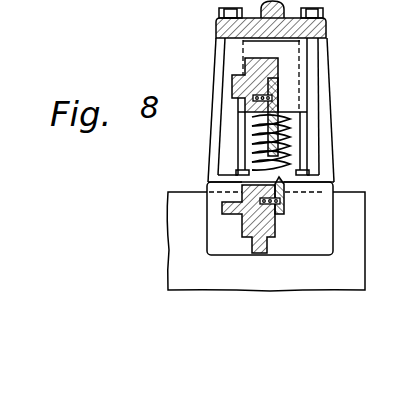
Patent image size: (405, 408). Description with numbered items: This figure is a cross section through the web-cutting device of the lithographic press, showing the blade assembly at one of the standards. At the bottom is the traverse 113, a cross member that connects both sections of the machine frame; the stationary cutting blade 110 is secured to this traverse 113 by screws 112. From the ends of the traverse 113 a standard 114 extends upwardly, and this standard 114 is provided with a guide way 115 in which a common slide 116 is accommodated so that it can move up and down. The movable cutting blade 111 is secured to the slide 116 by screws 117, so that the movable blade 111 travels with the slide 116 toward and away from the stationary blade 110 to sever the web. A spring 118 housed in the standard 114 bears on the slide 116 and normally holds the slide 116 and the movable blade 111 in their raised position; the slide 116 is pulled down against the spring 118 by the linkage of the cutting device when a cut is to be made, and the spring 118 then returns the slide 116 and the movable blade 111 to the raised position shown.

The stationary cutting blade 110 is at (315, 186).
The movable cutting blade 111 is at (283, 131).
The screws 112 is at (281, 203).
The traverse 113 is at (270, 229).
The standards 114 is at (279, 85).
The guide ways 115 is at (241, 156).
The slide 116 is at (271, 47).
The screws 117 is at (273, 98).
The springs 118 is at (263, 131).